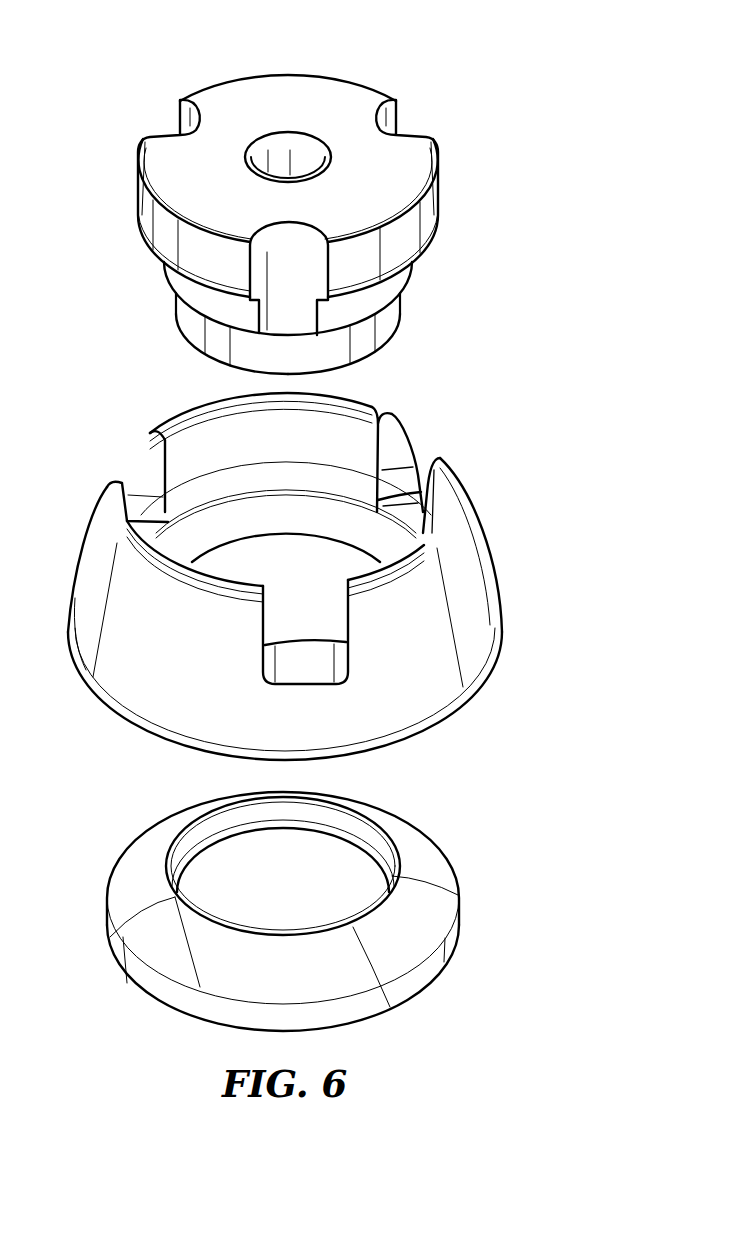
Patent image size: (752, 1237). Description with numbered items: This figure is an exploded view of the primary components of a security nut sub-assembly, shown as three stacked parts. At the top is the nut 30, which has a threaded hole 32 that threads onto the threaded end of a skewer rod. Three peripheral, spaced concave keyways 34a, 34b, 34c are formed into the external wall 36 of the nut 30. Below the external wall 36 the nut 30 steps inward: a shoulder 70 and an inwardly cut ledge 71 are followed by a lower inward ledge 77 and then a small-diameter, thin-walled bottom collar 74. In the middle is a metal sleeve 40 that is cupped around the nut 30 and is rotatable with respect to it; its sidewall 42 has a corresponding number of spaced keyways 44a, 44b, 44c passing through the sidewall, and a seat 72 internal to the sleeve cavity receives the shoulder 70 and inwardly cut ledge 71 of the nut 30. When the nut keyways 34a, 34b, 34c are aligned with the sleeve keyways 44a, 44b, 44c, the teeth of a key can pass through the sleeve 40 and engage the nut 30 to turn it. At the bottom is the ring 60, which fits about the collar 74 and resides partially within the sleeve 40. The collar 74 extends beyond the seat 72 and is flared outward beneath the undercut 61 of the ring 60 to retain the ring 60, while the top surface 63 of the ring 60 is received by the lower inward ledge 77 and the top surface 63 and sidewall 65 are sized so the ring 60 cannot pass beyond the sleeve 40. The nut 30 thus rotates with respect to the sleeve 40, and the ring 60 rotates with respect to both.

The nut 30 is at (288, 95).
The threaded hole 32 is at (273, 155).
The concave keyway 34a is at (396, 122).
The concave keyway 34b is at (313, 271).
The concave keyway 34c is at (188, 120).
The external wall 36 is at (437, 212).
The shoulder 70 is at (407, 292).
The inwardly cut ledge 71 is at (173, 274).
The seat 72 is at (256, 482).
The collar 74 is at (203, 331).
The lower inward ledge 77 is at (378, 341).
The sleeve 40 is at (460, 567).
The sidewall 42 is at (473, 627).
The keyway 44a is at (388, 460).
The keyway 44b is at (303, 612).
The keyway 44c is at (145, 467).
The ring 60 is at (460, 926).
The undercut 61 is at (262, 842).
The top surface 63 is at (132, 878).
The sidewall 65 is at (147, 980).